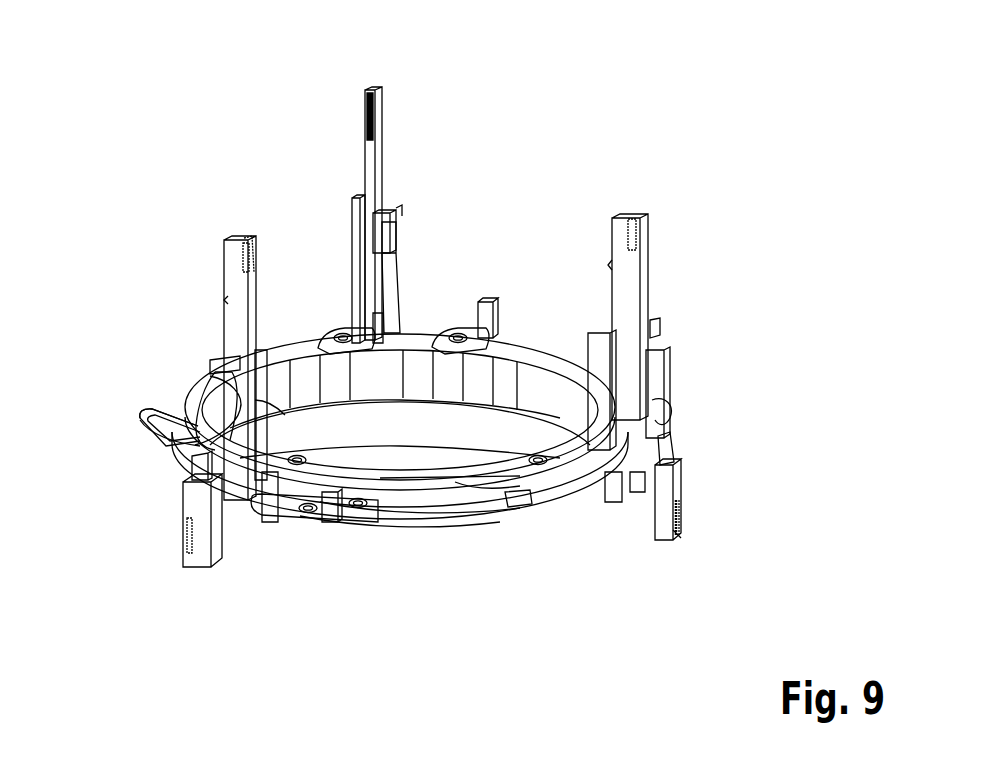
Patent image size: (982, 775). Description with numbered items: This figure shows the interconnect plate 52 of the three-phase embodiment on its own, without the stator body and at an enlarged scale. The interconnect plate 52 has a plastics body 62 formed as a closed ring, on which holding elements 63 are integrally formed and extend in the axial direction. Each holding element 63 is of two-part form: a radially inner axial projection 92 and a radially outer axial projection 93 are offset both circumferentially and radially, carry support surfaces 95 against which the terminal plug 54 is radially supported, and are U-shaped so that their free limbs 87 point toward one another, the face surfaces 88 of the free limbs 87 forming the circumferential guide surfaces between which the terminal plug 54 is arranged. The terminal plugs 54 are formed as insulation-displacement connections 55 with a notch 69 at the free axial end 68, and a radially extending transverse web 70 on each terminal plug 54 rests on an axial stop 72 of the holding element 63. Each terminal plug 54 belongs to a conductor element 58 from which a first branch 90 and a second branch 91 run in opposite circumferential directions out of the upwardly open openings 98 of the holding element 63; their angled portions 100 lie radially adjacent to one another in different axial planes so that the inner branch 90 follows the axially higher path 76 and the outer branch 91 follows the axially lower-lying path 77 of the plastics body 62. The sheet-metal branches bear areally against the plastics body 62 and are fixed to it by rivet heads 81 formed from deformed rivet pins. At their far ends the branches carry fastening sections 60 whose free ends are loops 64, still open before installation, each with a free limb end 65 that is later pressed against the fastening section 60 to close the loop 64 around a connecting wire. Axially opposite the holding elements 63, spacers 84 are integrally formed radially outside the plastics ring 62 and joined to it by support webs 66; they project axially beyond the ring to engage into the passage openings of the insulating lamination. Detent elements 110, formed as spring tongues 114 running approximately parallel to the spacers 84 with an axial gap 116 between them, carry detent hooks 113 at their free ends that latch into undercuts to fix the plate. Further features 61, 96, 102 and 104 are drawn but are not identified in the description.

The interconnect plate 52 is at (553, 143).
The terminal plug 54 is at (226, 240).
The insulation-displacement connection 55 is at (223, 220).
The conductor element 58 is at (400, 397).
The fastening section 60 is at (116, 415).
The inner wall 61 is at (468, 390).
The plastics body 62 is at (375, 405).
The holding element 63 is at (338, 212).
The loop 64 is at (135, 412).
The free limb end 65 is at (143, 440).
The support web 66 is at (670, 445).
The free axial end 68 is at (672, 240).
The notch 69 is at (631, 215).
The transverse web 70 is at (660, 317).
The axial stop 72 is at (398, 243).
The axially higher path 76 is at (455, 492).
The axially lower-lying path 77 is at (503, 517).
The rivet head 81 is at (460, 318).
The spacer 84 is at (188, 508).
The free limb 87 is at (225, 385).
The face surface 88 is at (172, 445).
The first branch 90 is at (458, 470).
The second branch 91 is at (515, 500).
The radially inner axial projection 92 is at (390, 282).
The radially outer axial projection 93 is at (352, 253).
The support surface 95 is at (262, 405).
The guide element 96 is at (400, 210).
The opening 98 is at (350, 282).
The angled portion 100 is at (270, 515).
The recess 102 is at (400, 472).
The clip 104 is at (372, 510).
The detent element 110 is at (675, 510).
The detent hook 113 is at (685, 532).
The spring tongue 114 is at (764, 514).
The axial gap 116 is at (198, 570).